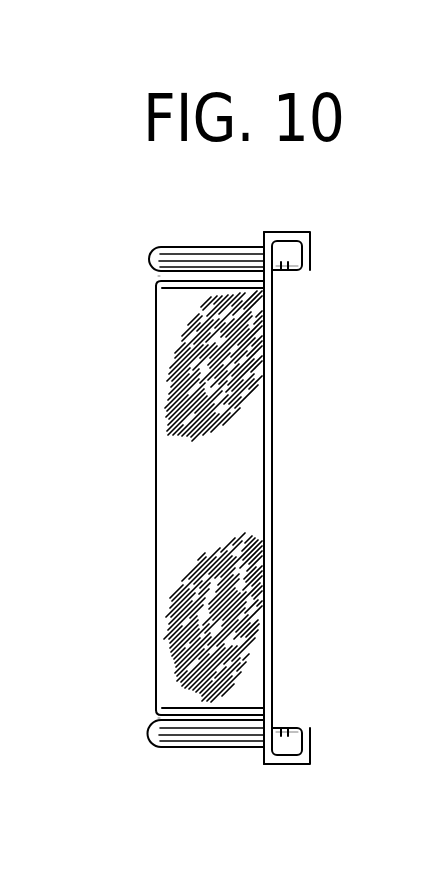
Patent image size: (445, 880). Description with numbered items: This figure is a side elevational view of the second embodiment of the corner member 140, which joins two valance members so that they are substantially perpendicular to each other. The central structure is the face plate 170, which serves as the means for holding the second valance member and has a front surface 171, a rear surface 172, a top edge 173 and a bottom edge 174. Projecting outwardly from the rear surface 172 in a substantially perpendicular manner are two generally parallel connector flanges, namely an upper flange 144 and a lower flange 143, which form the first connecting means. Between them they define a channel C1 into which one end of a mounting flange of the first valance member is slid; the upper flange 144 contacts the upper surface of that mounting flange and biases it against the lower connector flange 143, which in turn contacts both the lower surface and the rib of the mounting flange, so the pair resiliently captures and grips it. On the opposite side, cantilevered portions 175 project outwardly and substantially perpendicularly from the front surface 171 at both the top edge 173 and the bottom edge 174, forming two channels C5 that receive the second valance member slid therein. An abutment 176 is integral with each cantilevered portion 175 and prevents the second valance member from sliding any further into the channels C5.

The corner member 140 is at (353, 207).
The lower connector flange 143 is at (158, 283).
The upper connector flange 144 is at (156, 262).
The channel C1 is at (153, 277).
The face plate 170 is at (172, 452).
The front surface 171 is at (273, 503).
The rear surface 172 is at (263, 468).
The top edge 173 is at (281, 233).
The bottom edge 174 is at (283, 763).
The cantilevered portion 175 is at (307, 248).
The abutment 176 is at (290, 271).
The channel C5 is at (281, 272).